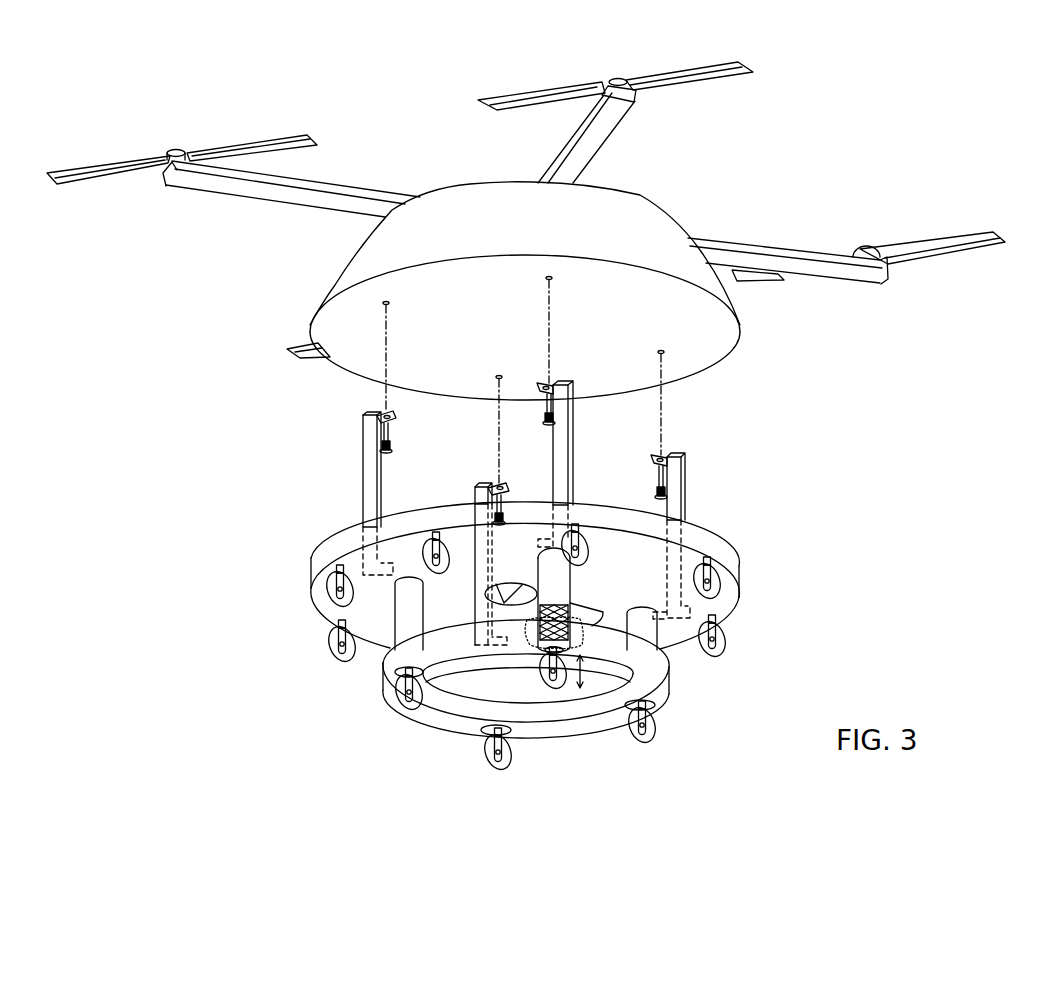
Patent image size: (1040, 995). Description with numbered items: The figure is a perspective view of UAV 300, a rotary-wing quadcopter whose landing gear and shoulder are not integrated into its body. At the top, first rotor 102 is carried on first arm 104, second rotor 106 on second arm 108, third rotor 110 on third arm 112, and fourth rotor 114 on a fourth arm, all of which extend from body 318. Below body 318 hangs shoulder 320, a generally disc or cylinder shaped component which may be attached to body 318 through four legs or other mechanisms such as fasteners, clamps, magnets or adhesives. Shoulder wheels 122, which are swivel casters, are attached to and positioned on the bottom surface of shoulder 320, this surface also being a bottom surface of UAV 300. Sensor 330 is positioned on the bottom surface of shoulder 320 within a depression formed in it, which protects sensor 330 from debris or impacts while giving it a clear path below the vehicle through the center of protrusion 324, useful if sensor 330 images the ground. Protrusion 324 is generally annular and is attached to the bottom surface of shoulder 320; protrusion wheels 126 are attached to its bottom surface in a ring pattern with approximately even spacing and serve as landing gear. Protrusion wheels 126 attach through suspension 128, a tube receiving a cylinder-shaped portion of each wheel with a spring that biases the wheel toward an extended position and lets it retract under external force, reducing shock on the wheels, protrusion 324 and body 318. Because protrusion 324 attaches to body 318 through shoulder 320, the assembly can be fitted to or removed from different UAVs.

The UAV 300 is at (526, 419).
The first rotor 102 is at (258, 147).
The first arm 104 is at (345, 191).
The second rotor 106 is at (690, 78).
The second arm 108 is at (583, 147).
The third rotor 110 is at (936, 252).
The third arm 112 is at (770, 247).
The fourth rotor 114 is at (300, 353).
The body 318 is at (638, 222).
The shoulder 320 is at (722, 601).
The shoulder wheels 122 is at (330, 588).
The protrusion wheels 126 is at (542, 672).
The suspension 128 is at (578, 614).
The protrusion 324 is at (548, 712).
The sensor 330 is at (516, 592).